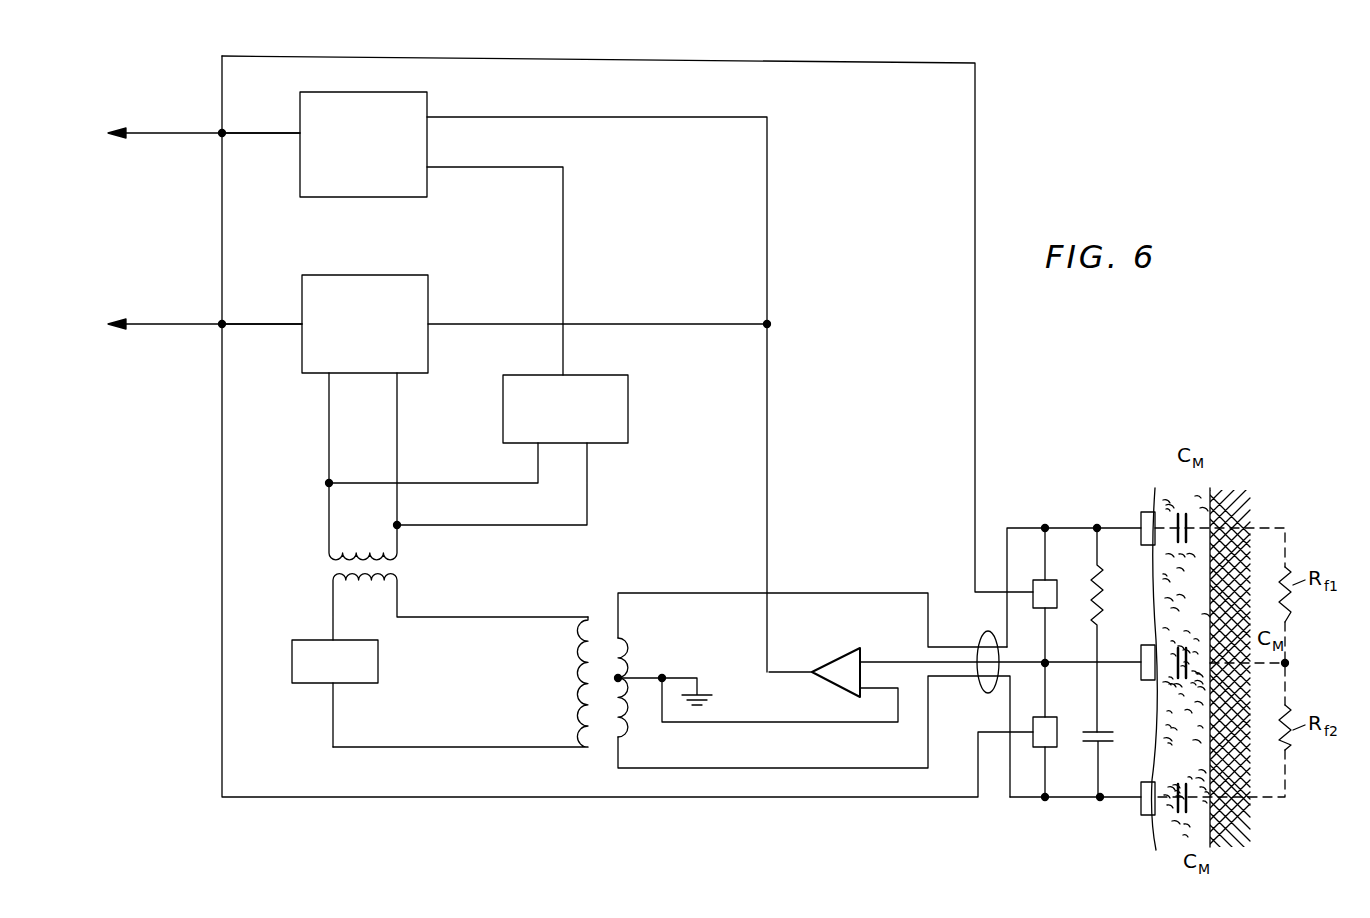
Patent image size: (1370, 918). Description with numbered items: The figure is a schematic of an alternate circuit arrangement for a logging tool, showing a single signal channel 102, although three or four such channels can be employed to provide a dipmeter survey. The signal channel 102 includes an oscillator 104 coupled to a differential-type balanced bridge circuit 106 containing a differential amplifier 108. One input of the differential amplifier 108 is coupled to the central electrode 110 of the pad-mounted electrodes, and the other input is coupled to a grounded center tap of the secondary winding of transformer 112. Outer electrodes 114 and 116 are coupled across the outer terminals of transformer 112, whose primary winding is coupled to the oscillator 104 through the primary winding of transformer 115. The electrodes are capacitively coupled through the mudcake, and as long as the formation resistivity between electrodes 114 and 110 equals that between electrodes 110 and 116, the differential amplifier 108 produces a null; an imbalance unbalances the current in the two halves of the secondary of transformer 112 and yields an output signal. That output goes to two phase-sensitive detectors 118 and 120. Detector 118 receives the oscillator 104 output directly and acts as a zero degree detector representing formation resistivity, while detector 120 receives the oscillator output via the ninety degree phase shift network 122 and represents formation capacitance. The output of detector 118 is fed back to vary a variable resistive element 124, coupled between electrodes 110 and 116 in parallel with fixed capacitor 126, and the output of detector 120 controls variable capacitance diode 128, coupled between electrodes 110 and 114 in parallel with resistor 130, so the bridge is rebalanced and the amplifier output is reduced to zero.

The signal channel 102 is at (650, 50).
The oscillator 104 is at (378, 660).
The differential-type balanced bridge circuit 106 is at (860, 592).
The differential amplifier 108 is at (842, 650).
The central electrode 110 is at (1141, 655).
The transformer 112 is at (592, 622).
The outer electrode 114 is at (1136, 518).
The transformer 115 is at (330, 567).
The outer electrode 116 is at (1142, 788).
The phase-sensitive detector 118 is at (428, 308).
The phase-sensitive detector 120 is at (424, 94).
The 90° phase shift network 122 is at (628, 412).
The variable resistive element 124 is at (1057, 745).
The fixed capacitor 126 is at (1080, 735).
The variable capacitance diode 128 is at (1033, 580).
The resistor 130 is at (1093, 566).